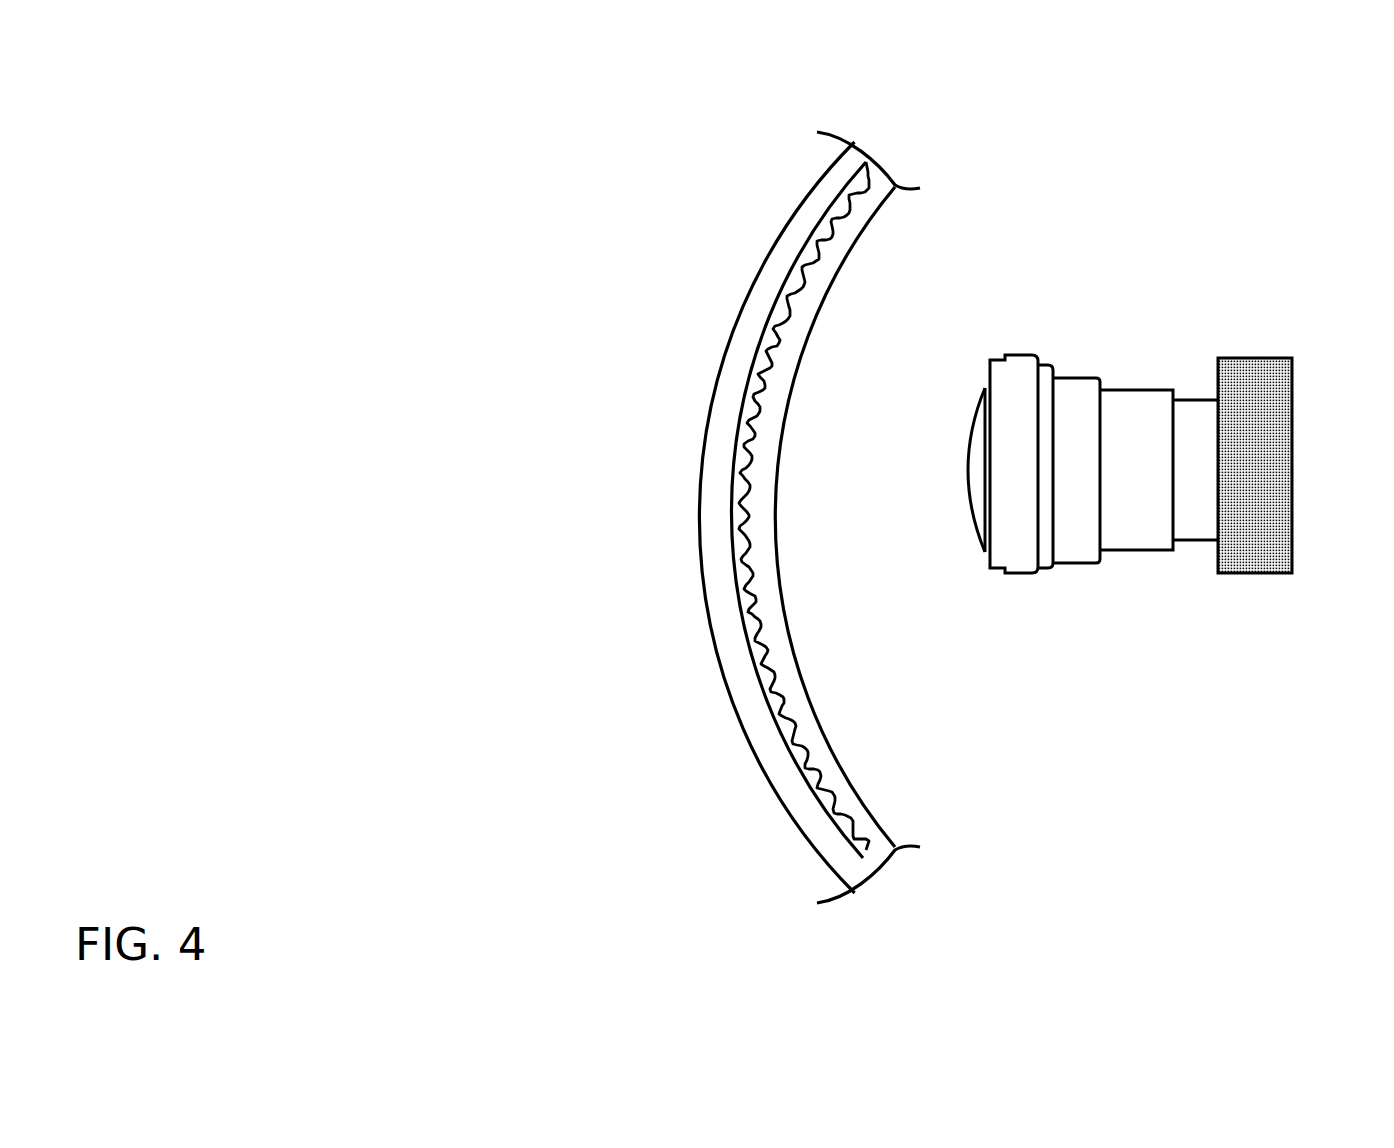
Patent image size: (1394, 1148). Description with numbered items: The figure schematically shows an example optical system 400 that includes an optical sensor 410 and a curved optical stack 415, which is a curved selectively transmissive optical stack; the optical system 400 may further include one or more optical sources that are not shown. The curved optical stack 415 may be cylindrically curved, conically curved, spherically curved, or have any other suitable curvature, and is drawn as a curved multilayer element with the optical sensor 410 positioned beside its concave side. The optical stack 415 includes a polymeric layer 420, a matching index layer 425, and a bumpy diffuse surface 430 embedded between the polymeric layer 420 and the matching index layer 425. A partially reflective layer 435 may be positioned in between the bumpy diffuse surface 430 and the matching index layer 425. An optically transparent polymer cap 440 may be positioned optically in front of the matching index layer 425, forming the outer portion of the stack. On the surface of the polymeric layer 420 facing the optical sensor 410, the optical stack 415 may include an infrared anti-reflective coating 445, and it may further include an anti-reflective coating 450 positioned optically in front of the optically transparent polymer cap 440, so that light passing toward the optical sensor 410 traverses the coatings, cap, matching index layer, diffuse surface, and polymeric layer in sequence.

The optical system 400 is at (1304, 72).
The optical sensor 410 is at (1188, 318).
The curved optical stack 415 is at (684, 92).
The polymeric layer 420 is at (892, 190).
The matching index layer 425 is at (868, 180).
The bumpy diffuse surface 430 is at (858, 842).
The partially reflective layer 435 is at (872, 857).
The optically transparent polymer cap 440 is at (850, 152).
The infrared anti-reflective coating 445 is at (812, 700).
The anti-reflective coating 450 is at (732, 704).